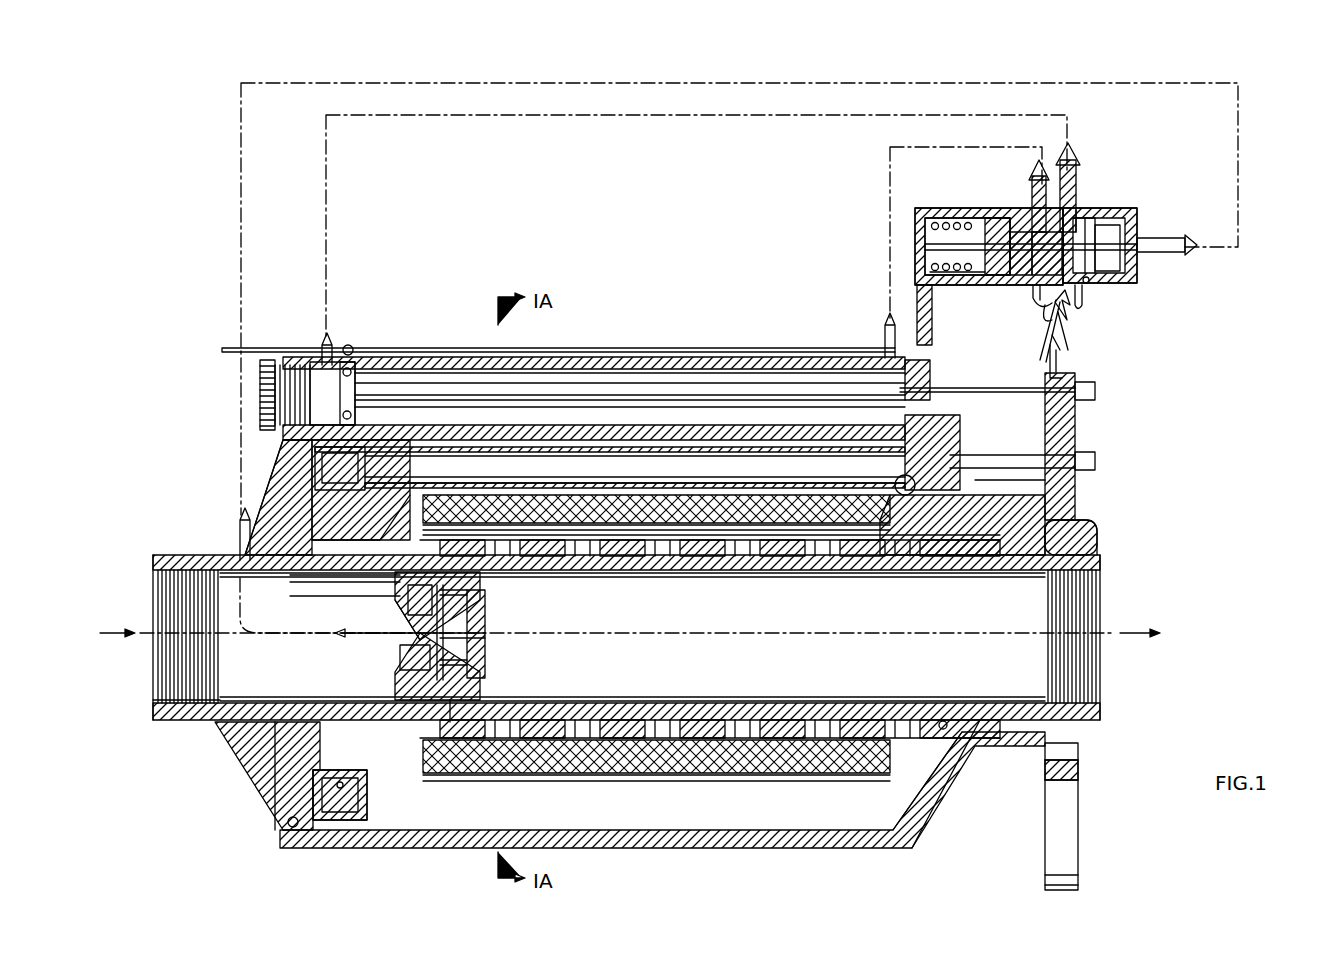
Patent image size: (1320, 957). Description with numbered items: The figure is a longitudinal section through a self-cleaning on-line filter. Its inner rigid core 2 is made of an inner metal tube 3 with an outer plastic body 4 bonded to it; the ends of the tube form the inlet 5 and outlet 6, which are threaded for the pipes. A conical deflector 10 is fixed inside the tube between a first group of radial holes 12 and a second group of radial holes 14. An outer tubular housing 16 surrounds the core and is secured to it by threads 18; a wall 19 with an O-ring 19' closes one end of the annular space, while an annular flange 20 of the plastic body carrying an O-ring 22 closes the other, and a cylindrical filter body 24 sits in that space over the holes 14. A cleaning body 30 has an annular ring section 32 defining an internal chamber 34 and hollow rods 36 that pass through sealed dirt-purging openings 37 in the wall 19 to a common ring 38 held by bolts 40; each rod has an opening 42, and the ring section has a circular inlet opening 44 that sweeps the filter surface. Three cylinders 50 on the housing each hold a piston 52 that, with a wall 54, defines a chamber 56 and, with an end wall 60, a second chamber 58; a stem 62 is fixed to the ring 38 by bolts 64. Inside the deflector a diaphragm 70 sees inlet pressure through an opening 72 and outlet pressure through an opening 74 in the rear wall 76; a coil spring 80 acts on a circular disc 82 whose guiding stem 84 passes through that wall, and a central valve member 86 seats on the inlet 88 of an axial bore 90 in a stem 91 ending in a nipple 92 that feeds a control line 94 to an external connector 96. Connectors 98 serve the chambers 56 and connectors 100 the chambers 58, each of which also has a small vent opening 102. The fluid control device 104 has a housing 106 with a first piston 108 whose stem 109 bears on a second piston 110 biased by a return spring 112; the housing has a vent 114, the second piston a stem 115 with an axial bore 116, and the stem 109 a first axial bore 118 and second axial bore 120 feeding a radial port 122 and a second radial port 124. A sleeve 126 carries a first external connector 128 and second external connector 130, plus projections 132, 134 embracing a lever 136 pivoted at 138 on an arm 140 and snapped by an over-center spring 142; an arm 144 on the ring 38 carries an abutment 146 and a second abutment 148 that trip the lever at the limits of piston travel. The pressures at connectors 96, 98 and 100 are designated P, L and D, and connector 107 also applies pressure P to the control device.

The inner rigid core 2 is at (168, 556).
The inner metal tube 3 is at (158, 574).
The outer plastic body 4 is at (590, 570).
The inlet 5 is at (158, 673).
The outlet 6 is at (1098, 596).
The conical deflector 10 is at (398, 596).
The radial holes 12 is at (332, 578).
The radial holes 14 is at (540, 779).
The outer tubular housing 16 is at (378, 848).
The threads 18 is at (1020, 740).
The wall 19 is at (936, 785).
The O-ring 19' is at (933, 699).
The annular flange 20 is at (283, 786).
The O-ring 22 is at (290, 826).
The filter body 24 is at (660, 525).
The cleaning body 30 is at (283, 446).
The first section 32 is at (368, 795).
The annular internal chamber 34 is at (348, 487).
The hollow rods 36 is at (665, 425).
The dirt-purging openings 37 is at (975, 481).
The common ring 38 is at (1045, 427).
The bolts 40 is at (339, 780).
The opening 42 is at (962, 513).
The circular inlet opening 44 is at (347, 490).
The cylinders 50 is at (458, 362).
The piston 52 is at (258, 385).
The wall 54 is at (283, 364).
The chamber 56 is at (318, 368).
The second chamber 58 is at (718, 378).
The wall 60 is at (932, 390).
The stem 62 is at (780, 390).
The bolts 64 is at (1095, 404).
The diaphragm 70 is at (420, 680).
The opening 72 is at (395, 610).
The opening 74 is at (485, 615).
The rear wall 76 is at (507, 565).
The coil spring 80 is at (450, 722).
The circular disc 82 is at (470, 600).
The guiding stem 84 is at (485, 640).
The central valve member 86 is at (470, 656).
The inlet 88 is at (430, 600).
The axial bore 90 is at (400, 641).
The stem 91 is at (413, 657).
The nipple 92 is at (360, 640).
The control line 94 is at (288, 638).
The external connector 96 is at (240, 542).
The connectors 98 is at (332, 352).
The connectors 100 is at (866, 335).
The vent opening 102 is at (925, 442).
The fluid control device 104 is at (1165, 196).
The housing 106 is at (1137, 225).
The connector 107 is at (1150, 258).
The first piston 108 is at (1095, 235).
The stem 109 is at (1084, 292).
The second piston 110 is at (998, 230).
The return spring 112 is at (917, 300).
The vent 114 is at (930, 272).
The stem 115 is at (935, 241).
The axial bore 116 is at (950, 240).
The first axial bore 118 is at (1020, 235).
The second axial bore 120 is at (1096, 228).
The radial port 122 is at (1035, 230).
The second radial port 124 is at (1085, 225).
The sleeve 126 is at (1088, 284).
The first external connector 128 is at (1038, 160).
The second external connector 130 is at (1070, 145).
The projection 132 is at (1005, 302).
The projection 134 is at (1068, 312).
The lever 136 is at (1040, 360).
The pivot 138 is at (1038, 320).
The arm 140 is at (1030, 298).
The over-center spring 142 is at (1066, 345).
The arm 144 is at (607, 360).
The abutment 146 is at (353, 350).
The second abutment 148 is at (1065, 365).
The pressure P is at (739, 299).
The pressure L is at (696, 227).
The pressure D is at (948, 233).